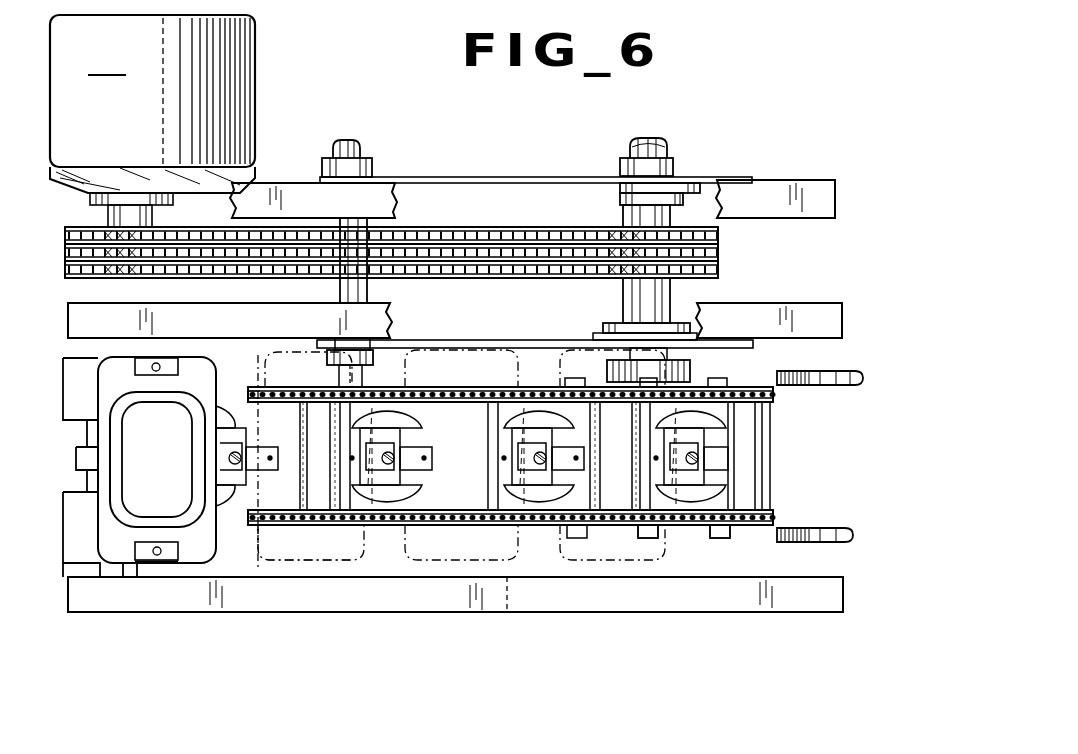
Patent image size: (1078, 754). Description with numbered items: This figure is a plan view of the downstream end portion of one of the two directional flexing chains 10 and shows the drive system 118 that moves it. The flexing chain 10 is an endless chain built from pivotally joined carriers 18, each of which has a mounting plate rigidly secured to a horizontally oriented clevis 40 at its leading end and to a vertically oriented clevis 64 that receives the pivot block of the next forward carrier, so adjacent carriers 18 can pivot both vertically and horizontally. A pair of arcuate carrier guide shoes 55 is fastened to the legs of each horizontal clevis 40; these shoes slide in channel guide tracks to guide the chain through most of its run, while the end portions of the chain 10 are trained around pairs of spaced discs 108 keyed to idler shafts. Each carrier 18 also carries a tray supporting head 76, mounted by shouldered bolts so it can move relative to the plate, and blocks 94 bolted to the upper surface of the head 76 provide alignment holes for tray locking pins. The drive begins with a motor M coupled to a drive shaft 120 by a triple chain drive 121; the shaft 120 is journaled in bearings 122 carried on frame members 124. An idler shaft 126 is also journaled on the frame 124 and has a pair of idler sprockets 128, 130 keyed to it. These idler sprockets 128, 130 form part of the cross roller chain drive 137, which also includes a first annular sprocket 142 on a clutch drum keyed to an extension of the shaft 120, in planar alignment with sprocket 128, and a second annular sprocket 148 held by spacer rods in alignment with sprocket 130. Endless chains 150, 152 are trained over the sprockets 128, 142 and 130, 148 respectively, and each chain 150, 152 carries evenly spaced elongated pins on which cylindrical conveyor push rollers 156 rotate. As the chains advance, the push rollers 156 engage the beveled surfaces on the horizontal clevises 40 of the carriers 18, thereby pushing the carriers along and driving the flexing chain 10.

The two directional flexing chain 10 is at (382, 543).
The carrier 18 is at (167, 576).
The horizontal clevis 40 is at (398, 433).
The arcuate carrier guide shoes 55 is at (418, 388).
The vertical clevis 64 is at (434, 462).
The tray supporting head 76 is at (216, 548).
The blocks 94 is at (152, 358).
The spaced discs 108 is at (842, 371).
The drive system 118 is at (485, 220).
The drive shaft 120 is at (662, 142).
The triple chain drive 121 is at (416, 226).
The bearings 122 is at (678, 183).
The frame members 124 is at (832, 220).
The idler shaft 126 is at (338, 152).
The idler sprocket 128 is at (302, 387).
The idler sprocket 130 is at (308, 528).
The cross roller chain drive 137 is at (778, 456).
The first annular sprocket 142 is at (692, 386).
The second annular sprocket 148 is at (697, 528).
The endless chain 150 is at (254, 387).
The endless chain 152 is at (763, 528).
The conveyor push rollers 156 is at (520, 387).